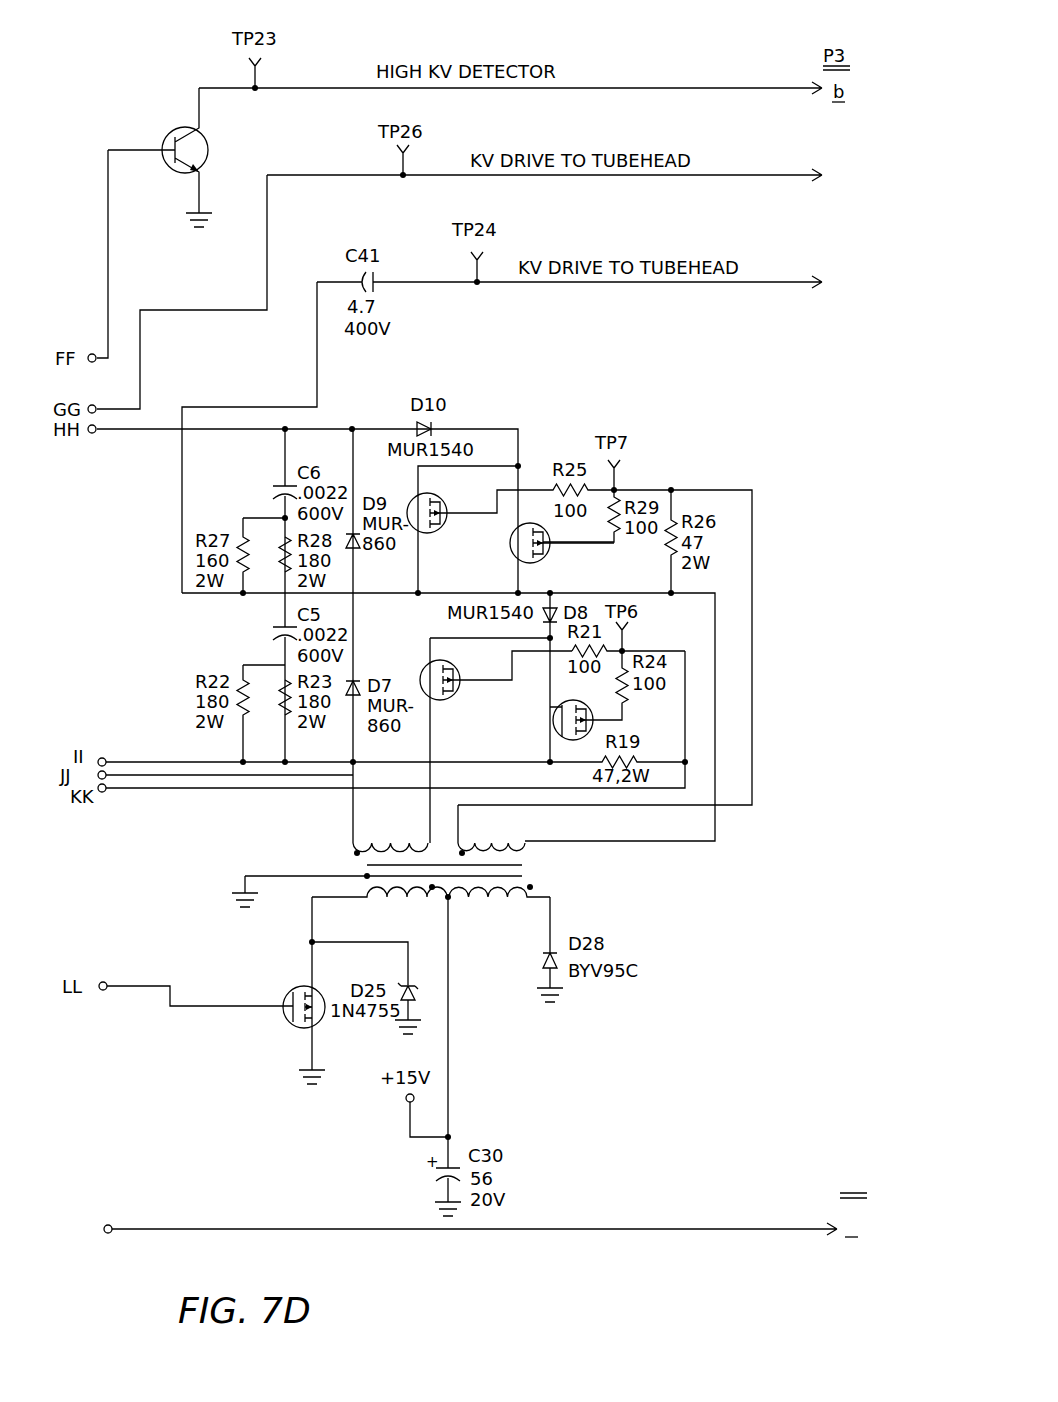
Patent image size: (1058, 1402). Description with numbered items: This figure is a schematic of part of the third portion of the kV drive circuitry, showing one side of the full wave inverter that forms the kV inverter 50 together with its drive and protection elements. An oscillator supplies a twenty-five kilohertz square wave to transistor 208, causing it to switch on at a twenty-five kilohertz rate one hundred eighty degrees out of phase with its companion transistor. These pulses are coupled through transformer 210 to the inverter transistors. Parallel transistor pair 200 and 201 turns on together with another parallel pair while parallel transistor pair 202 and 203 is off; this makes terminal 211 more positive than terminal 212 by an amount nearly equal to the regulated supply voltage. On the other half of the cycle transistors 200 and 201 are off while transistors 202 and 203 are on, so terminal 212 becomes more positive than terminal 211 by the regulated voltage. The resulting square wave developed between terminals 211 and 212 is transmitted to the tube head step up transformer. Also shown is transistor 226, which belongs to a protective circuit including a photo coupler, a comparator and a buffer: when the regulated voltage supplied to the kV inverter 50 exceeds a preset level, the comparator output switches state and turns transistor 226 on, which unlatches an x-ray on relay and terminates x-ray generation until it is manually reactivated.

The transistor 226 is at (168, 134).
The terminal 211 is at (858, 162).
The terminal 212 is at (857, 271).
The transistor 202 is at (405, 499).
The transistor 203 is at (512, 555).
The transistor 200 is at (422, 662).
The transistor 201 is at (600, 698).
The transformer 210 is at (572, 868).
The transistor 208 is at (296, 1030).
The kV inverter 50 is at (525, 1235).